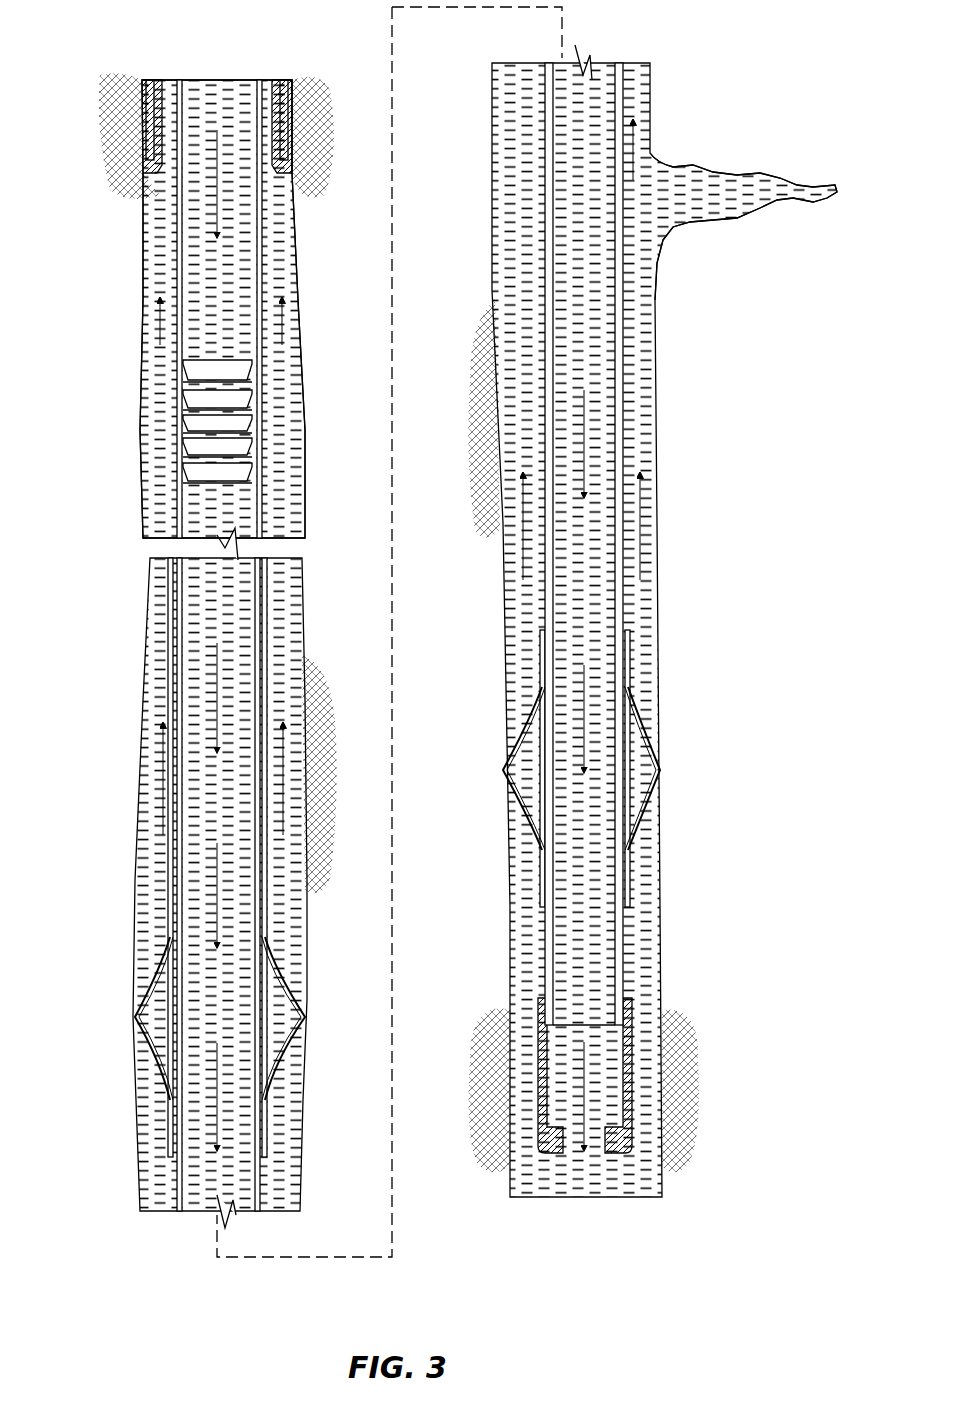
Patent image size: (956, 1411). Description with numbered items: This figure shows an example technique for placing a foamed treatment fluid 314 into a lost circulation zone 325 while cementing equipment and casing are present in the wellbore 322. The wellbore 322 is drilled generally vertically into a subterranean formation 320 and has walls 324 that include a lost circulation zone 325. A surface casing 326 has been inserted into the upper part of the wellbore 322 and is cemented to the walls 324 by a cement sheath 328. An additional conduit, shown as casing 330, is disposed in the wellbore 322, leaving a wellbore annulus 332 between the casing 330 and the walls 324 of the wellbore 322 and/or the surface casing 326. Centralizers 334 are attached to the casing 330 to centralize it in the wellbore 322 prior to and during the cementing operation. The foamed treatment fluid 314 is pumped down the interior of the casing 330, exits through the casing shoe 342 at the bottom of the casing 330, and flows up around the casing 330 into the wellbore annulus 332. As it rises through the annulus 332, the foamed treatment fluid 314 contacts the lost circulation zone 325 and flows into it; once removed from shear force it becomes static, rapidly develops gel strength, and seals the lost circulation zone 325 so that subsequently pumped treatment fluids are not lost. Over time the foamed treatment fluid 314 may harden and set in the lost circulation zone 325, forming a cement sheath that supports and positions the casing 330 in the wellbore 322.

The foamed treatment fluid 314 is at (217, 183).
The subterranean formation 320 is at (720, 118).
The wellbore 322 is at (128, 1064).
The walls 324 is at (143, 430).
The lost circulation zone 325 is at (747, 217).
The surface casing 326 is at (157, 100).
The cement sheath 328 is at (150, 140).
The casing 330 is at (170, 713).
The wellbore annulus 332 is at (152, 862).
The centralizer 334 is at (647, 720).
The casing shoe 342 is at (637, 1112).